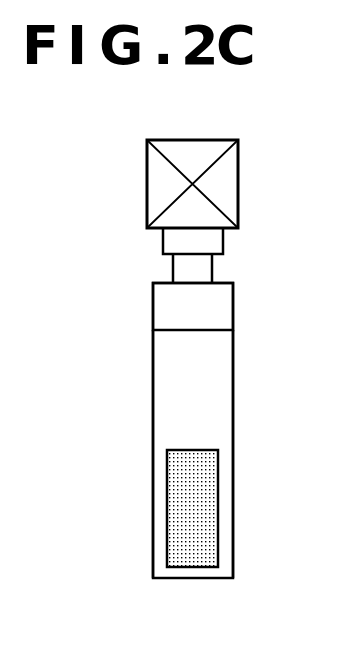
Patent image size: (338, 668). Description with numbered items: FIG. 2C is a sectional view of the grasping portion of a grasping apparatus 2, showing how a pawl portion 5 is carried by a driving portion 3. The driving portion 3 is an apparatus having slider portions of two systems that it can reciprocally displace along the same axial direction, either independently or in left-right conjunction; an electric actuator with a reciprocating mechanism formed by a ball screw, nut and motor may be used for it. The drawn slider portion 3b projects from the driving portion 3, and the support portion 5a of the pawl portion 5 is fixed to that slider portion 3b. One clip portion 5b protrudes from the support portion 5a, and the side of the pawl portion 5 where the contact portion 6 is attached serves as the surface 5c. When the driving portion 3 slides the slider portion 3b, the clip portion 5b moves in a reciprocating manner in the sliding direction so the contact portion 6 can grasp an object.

The rotating electric machine 2 is at (106, 159).
The driving portion 3 is at (264, 177).
The slider portion 3b is at (223, 240).
The pawl portion 5 is at (255, 353).
The support portion 5a is at (153, 305).
The clip portion 5b is at (153, 389).
The surface 5c is at (162, 424).
The contact portion 6 is at (214, 508).